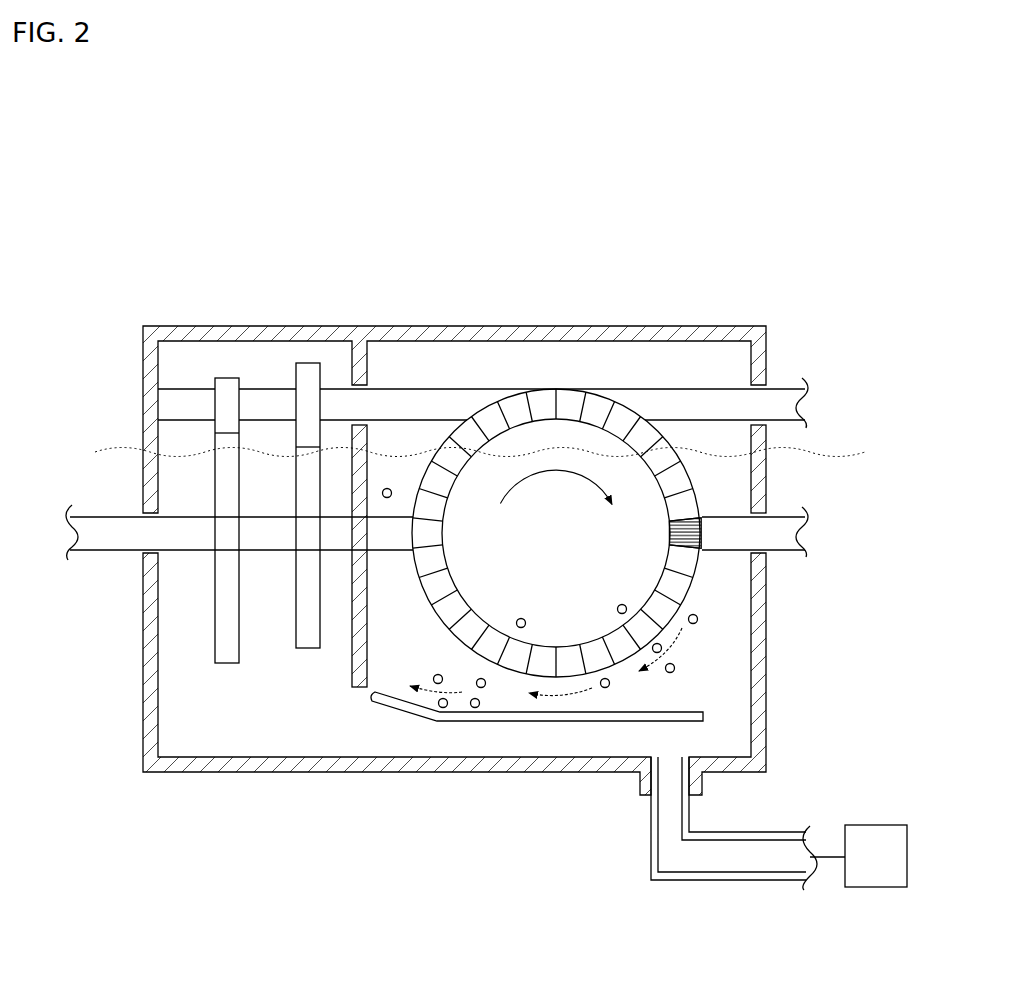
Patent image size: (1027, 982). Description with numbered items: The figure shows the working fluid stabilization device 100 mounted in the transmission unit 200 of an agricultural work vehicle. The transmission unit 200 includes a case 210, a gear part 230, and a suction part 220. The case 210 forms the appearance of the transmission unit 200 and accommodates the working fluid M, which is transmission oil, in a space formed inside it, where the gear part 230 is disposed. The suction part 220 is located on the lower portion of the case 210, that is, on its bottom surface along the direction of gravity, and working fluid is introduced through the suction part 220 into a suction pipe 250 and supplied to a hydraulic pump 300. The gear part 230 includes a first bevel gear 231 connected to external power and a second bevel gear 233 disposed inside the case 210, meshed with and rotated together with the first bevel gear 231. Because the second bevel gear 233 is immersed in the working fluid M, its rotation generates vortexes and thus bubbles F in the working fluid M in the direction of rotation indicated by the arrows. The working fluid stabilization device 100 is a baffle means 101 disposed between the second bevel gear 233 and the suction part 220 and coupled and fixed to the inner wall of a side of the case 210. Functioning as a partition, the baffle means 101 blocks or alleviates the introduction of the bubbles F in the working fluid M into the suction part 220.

The transmission unit 200 is at (429, 532).
The case 210 is at (218, 772).
The suction part 220 is at (640, 787).
The gear part 230 is at (706, 476).
The first bevel gear 231 is at (790, 542).
The second bevel gear 233 is at (627, 650).
The suction pipe 250 is at (700, 882).
The hydraulic pump 300 is at (875, 823).
The working fluid stabilization device 100 is at (537, 807).
The baffle means 101 is at (522, 723).
The bubbles F is at (612, 684).
The working fluid M is at (481, 453).